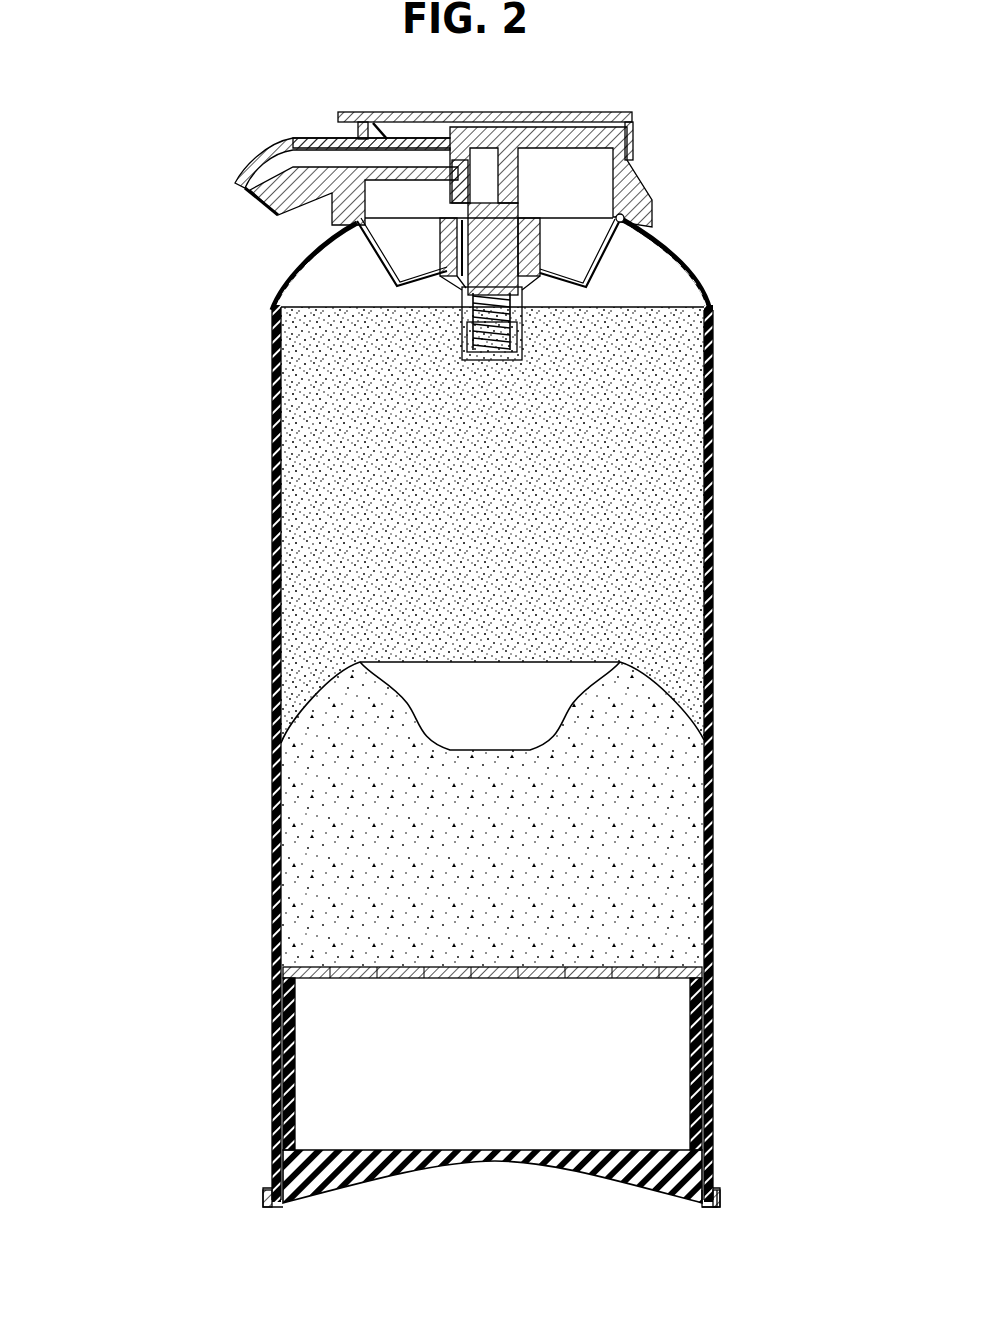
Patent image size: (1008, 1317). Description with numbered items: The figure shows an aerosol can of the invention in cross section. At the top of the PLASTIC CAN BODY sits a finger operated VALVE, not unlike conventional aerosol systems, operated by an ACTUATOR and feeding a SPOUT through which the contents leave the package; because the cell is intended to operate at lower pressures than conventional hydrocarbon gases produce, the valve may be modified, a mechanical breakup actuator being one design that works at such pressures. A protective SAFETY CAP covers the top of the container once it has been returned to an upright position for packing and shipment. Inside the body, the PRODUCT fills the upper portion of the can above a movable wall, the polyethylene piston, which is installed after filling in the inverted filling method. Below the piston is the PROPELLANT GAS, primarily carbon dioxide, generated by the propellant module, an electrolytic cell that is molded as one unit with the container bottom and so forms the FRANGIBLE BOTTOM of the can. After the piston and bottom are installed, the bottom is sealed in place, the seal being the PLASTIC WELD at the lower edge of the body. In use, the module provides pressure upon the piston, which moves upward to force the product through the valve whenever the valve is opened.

The spout SPOUT is at (235, 182).
The actuator ACTUATOR is at (518, 112).
The safety cap SAFETY CAP is at (632, 113).
The valve VALVE is at (536, 330).
The product PRODUCT is at (360, 460).
The plastic can body PLASTIC CAN BODY is at (713, 475).
The propellant gas PROPELLANT GAS is at (310, 809).
The container bottom FRANGIBLE BOTTOM is at (493, 1162).
The plastic weld PLASTIC WELD is at (713, 1192).